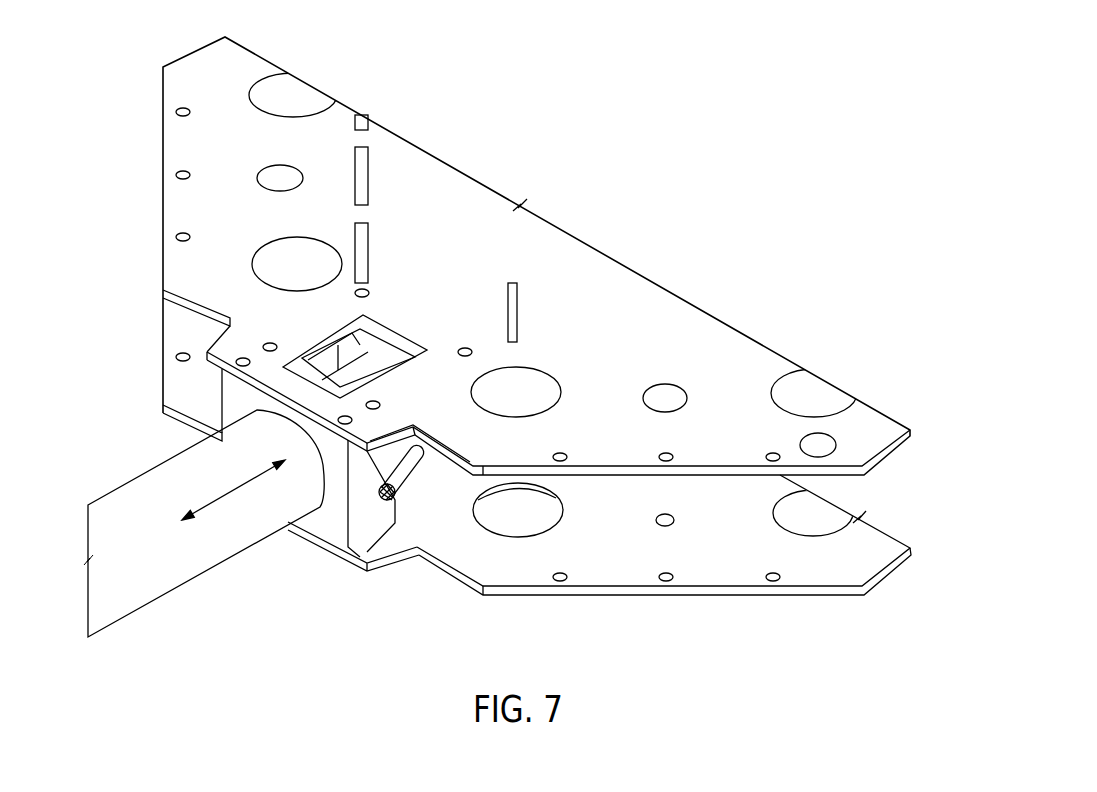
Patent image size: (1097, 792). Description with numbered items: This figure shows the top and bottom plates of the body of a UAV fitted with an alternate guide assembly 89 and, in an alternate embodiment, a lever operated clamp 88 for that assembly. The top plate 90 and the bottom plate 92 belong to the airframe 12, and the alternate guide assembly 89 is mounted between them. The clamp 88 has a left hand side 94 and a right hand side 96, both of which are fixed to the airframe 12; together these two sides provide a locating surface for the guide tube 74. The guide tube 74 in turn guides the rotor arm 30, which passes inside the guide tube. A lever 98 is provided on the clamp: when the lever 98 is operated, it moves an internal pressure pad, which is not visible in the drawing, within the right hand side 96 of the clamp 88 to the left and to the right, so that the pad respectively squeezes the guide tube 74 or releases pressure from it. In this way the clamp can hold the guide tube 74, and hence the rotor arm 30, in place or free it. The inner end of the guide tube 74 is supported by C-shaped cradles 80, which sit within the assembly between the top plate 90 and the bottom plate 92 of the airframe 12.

The airframe 12 is at (735, 305).
The rotor arm 30 is at (130, 613).
The guide tube 74 is at (360, 353).
The C-shaped cradles 80 is at (440, 470).
The lever operated clamp 88 is at (307, 532).
The alternate guide assembly 89 is at (527, 475).
The top plate 90 is at (893, 421).
The bottom plate 92 is at (895, 541).
The left hand side 94 is at (223, 405).
The right hand side 96 is at (360, 558).
The lever 98 is at (407, 466).